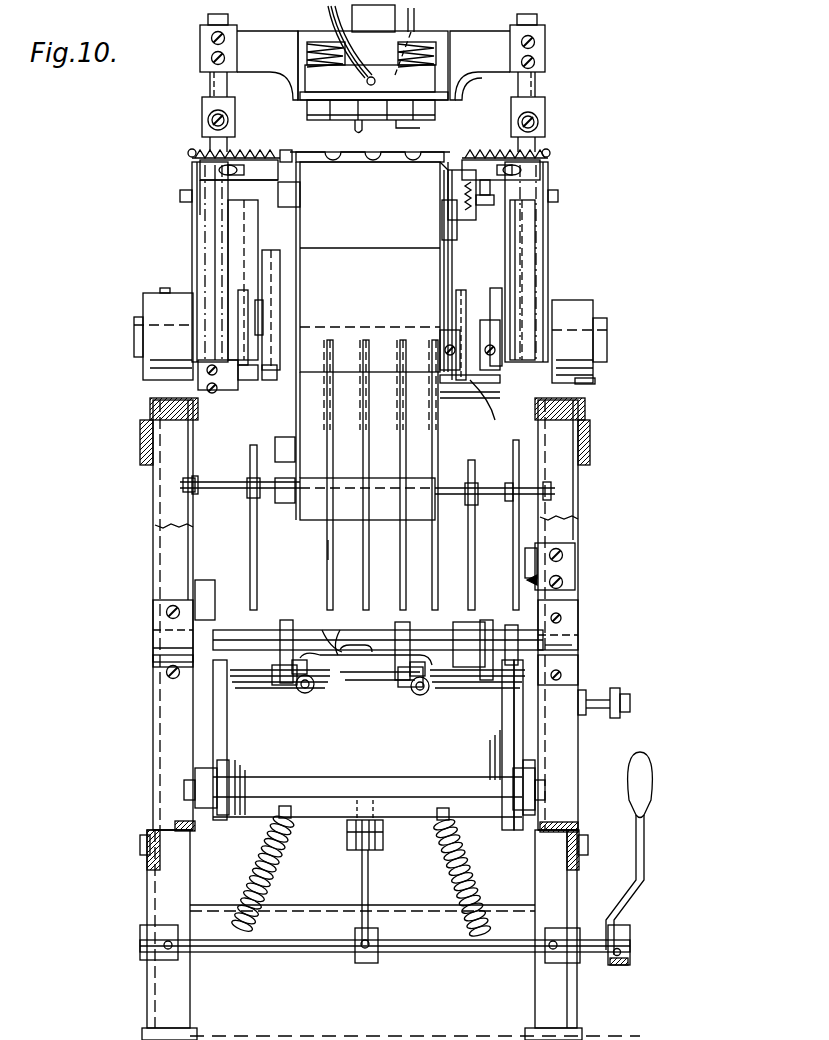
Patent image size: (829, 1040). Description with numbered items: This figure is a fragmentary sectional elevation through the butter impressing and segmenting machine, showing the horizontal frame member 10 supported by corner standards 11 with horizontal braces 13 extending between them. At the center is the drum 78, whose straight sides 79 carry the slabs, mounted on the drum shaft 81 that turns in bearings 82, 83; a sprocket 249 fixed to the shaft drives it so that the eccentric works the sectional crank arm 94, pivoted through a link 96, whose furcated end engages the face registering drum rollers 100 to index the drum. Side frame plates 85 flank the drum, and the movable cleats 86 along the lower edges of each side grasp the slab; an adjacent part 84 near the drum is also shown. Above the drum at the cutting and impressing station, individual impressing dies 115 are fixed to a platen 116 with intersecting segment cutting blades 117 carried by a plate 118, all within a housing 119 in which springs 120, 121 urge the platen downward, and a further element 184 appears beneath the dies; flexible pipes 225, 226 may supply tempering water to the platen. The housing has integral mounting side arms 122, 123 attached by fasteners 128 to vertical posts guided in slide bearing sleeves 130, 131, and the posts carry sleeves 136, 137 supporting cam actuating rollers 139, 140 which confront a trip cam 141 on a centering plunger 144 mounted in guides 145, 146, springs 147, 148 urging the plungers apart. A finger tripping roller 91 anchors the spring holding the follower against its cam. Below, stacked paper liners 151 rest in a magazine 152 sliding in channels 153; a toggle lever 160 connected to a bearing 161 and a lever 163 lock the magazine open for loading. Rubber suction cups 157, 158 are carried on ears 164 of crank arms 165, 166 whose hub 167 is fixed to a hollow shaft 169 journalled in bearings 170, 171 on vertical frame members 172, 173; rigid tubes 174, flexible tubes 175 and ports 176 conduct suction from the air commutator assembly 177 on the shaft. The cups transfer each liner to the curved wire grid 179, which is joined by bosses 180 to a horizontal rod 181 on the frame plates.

The horizontal frame member 10 is at (150, 408).
The corner standards 11 is at (577, 996).
The horizontal braces 13 is at (155, 825).
The drum 78 is at (420, 278).
The straight sides 79 is at (390, 221).
The drum shaft 81 is at (134, 341).
The bearing 82 is at (580, 380).
The bearing 83 is at (152, 310).
The bracket 84 is at (540, 420).
The frame plates 85 is at (192, 247).
The movable cleats 86 is at (312, 160).
The finger tripping roller 91 is at (440, 212).
The crank arm 94 is at (282, 380).
The link 96 is at (245, 431).
The drum rollers 100 is at (278, 194).
The impressing dies 115 is at (342, 120).
The platen 116 is at (402, 96).
The segment cutting blades 117 is at (365, 122).
The plate 118 is at (318, 98).
The housing 119 is at (460, 75).
The spring 120 is at (320, 44).
The spring 121 is at (432, 48).
The mounting side arm 122 is at (492, 65).
The mounting side arm 123 is at (254, 65).
The fasteners 128 is at (212, 40).
The slide bearing sleeve 130 is at (232, 258).
The slide bearing sleeve 131 is at (540, 258).
The sleeve 136 is at (546, 105).
The sleeve 137 is at (202, 101).
The cam actuating roller 139 is at (228, 120).
The cam actuating roller 140 is at (538, 122).
The trip cam 141 is at (536, 146).
The centering plunger 144 is at (230, 150).
The guide 145 is at (535, 176).
The guide 146 is at (262, 178).
The spring 147 is at (482, 152).
The spring 148 is at (284, 150).
The paper liners 151 is at (384, 753).
The magazine 152 is at (408, 625).
The channels 153 is at (222, 820).
The rubber suction cup 157 is at (395, 690).
The rubber suction cup 158 is at (316, 690).
The toggle lever 160 is at (372, 895).
The bearing 161 is at (332, 955).
The lever 163 is at (646, 860).
The ears 164 is at (298, 693).
The crank arm 165 is at (362, 652).
The crank arm 166 is at (270, 650).
The hub 167 is at (412, 645).
The hollow shaft 169 is at (230, 635).
The bearing 170 is at (568, 642).
The bearing 171 is at (160, 635).
The vertical frame member 172 is at (566, 757).
The vertical frame member 173 is at (165, 715).
The rigid tubes 174 is at (345, 570).
The flexible tubes 175 is at (346, 630).
The ports 176 is at (324, 630).
The air commutator assembly 177 is at (468, 626).
The curved wire grid 179 is at (250, 573).
The bosses 180 is at (250, 482).
The horizontal rod 181 is at (206, 486).
The finger 184 is at (405, 124).
The flexible pipe 225 is at (330, 30).
The flexible pipe 226 is at (416, 15).
The sprocket 249 is at (480, 430).